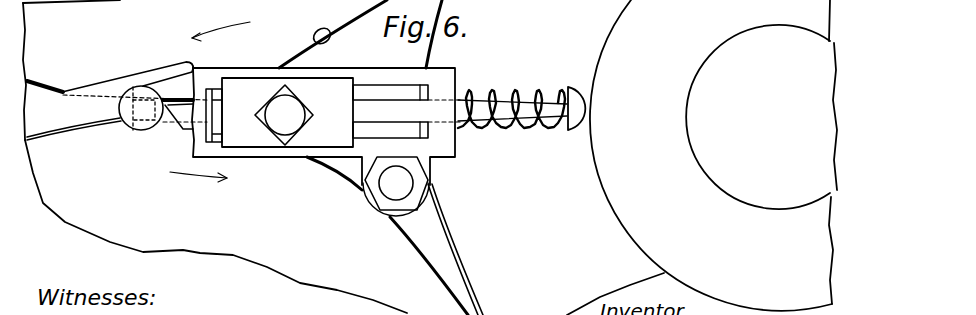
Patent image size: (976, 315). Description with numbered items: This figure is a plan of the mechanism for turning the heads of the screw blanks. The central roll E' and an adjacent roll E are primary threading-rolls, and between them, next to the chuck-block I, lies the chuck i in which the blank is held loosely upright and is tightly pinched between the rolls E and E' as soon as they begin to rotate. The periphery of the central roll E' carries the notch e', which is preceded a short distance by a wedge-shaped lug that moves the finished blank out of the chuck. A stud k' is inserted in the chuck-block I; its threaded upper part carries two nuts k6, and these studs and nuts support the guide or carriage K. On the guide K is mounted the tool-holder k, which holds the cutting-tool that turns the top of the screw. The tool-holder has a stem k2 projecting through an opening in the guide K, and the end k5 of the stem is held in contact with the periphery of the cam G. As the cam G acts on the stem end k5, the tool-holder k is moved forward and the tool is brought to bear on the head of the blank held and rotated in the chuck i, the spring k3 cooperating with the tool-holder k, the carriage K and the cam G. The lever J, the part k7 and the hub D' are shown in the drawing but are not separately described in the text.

The central roll E' is at (136, 70).
The roll E is at (344, 227).
The lever J is at (127, 69).
The chuck-block I is at (255, 157).
The chuck i is at (142, 114).
The notch e' is at (324, 26).
The guide K is at (323, 124).
The tool-holder k is at (287, 112).
The diamond key k7 is at (284, 115).
The stem k2 is at (407, 111).
The spring k3 is at (512, 98).
The end of the stem k5 is at (578, 108).
The cam G is at (711, 155).
The hub D' is at (761, 104).
The nuts k6 is at (395, 186).
The stud k' is at (396, 183).